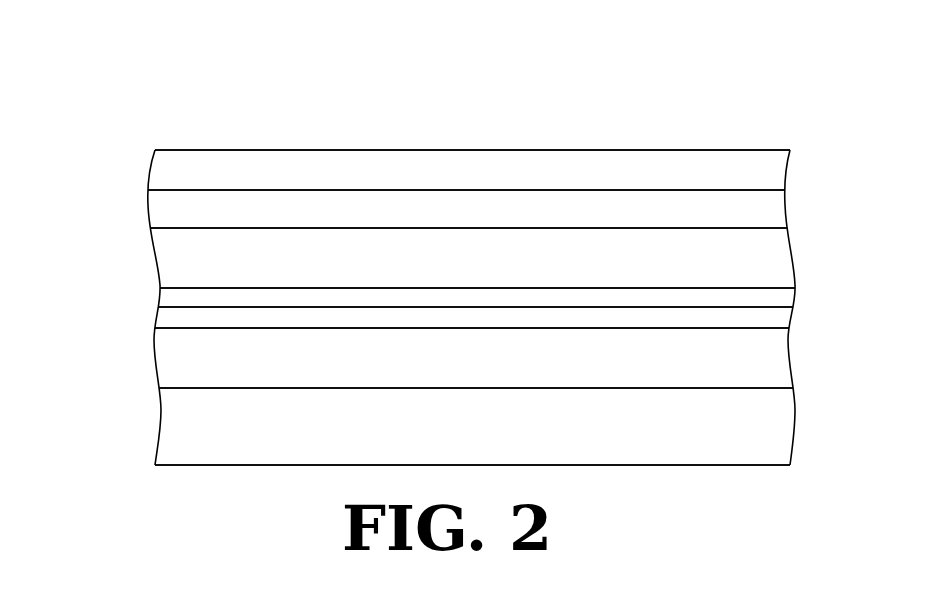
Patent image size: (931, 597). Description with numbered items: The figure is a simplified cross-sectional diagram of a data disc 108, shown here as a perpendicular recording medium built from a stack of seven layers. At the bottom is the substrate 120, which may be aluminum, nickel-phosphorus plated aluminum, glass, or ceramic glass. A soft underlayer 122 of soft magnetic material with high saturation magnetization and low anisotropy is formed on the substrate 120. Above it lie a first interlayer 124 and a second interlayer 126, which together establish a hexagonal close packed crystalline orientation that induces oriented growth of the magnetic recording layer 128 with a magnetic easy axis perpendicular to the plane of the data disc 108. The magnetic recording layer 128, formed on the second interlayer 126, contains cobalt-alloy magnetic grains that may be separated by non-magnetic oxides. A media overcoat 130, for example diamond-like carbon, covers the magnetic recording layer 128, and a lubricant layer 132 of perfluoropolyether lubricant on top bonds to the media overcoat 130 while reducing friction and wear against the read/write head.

The data disc 108 is at (112, 82).
The lubricant layer 132 is at (167, 170).
The media overcoat 130 is at (773, 209).
The magnetic recording layer 128 is at (167, 260).
The second interlayer 126 is at (773, 298).
The first interlayer 124 is at (167, 318).
The soft underlayer 122 is at (773, 358).
The substrate 120 is at (167, 428).